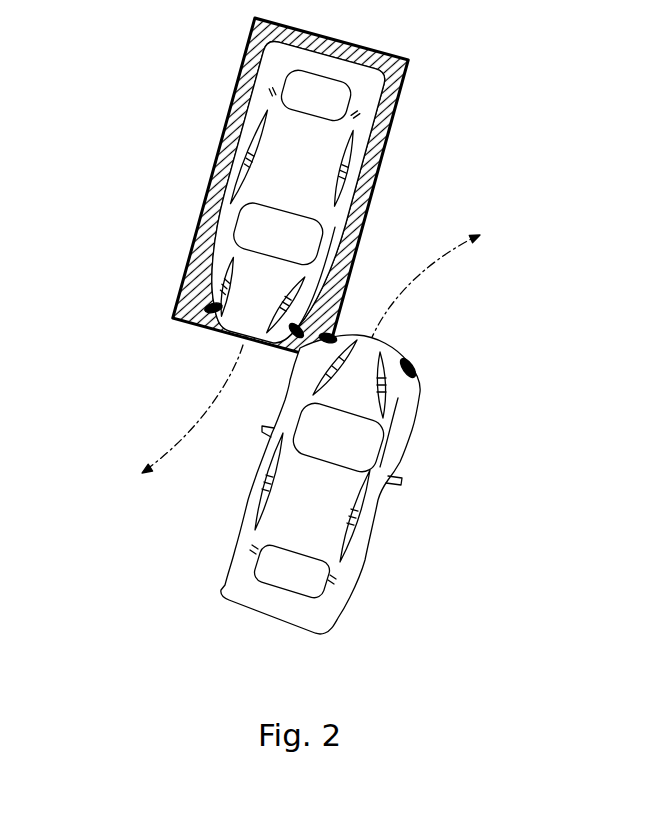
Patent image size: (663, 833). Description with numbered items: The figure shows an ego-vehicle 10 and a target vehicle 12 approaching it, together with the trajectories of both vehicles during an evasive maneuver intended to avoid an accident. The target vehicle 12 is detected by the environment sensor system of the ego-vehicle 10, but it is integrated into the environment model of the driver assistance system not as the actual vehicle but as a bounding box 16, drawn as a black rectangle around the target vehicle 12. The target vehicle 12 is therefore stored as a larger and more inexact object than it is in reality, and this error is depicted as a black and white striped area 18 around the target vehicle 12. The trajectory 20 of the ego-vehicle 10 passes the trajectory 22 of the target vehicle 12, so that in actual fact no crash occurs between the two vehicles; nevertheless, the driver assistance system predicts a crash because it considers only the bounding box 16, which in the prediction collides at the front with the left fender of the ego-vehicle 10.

The ego-vehicle 10 is at (315, 510).
The target vehicle 12 is at (270, 173).
The bounding box 16 is at (400, 90).
The striped area 18 is at (242, 63).
The trajectory of the ego-vehicle 20 is at (423, 275).
The trajectory of the target vehicle 22 is at (193, 432).